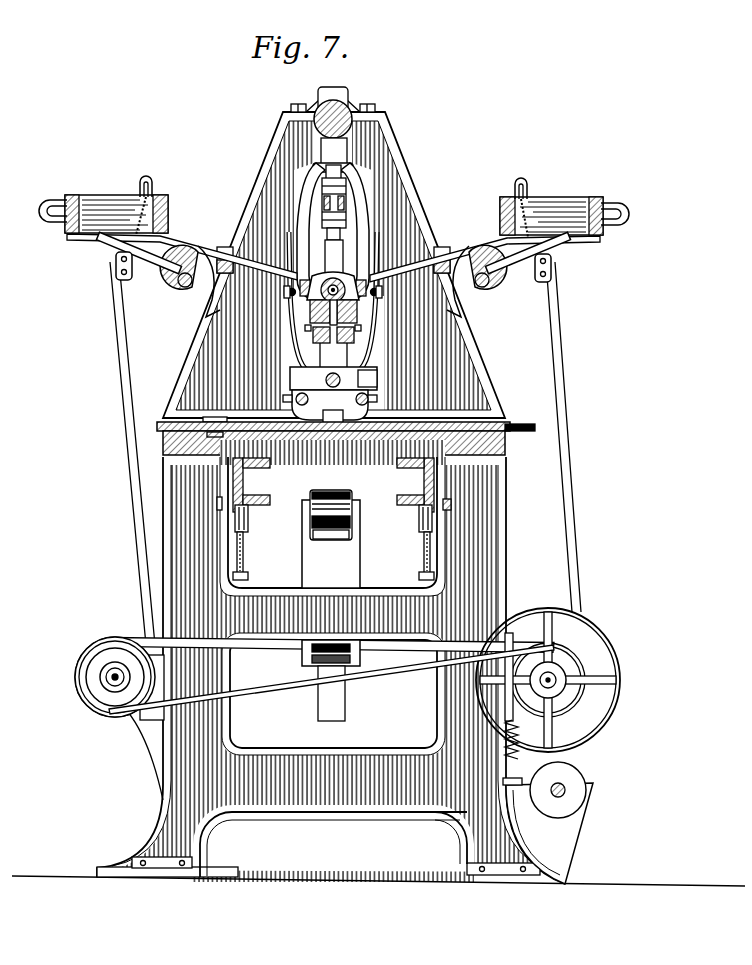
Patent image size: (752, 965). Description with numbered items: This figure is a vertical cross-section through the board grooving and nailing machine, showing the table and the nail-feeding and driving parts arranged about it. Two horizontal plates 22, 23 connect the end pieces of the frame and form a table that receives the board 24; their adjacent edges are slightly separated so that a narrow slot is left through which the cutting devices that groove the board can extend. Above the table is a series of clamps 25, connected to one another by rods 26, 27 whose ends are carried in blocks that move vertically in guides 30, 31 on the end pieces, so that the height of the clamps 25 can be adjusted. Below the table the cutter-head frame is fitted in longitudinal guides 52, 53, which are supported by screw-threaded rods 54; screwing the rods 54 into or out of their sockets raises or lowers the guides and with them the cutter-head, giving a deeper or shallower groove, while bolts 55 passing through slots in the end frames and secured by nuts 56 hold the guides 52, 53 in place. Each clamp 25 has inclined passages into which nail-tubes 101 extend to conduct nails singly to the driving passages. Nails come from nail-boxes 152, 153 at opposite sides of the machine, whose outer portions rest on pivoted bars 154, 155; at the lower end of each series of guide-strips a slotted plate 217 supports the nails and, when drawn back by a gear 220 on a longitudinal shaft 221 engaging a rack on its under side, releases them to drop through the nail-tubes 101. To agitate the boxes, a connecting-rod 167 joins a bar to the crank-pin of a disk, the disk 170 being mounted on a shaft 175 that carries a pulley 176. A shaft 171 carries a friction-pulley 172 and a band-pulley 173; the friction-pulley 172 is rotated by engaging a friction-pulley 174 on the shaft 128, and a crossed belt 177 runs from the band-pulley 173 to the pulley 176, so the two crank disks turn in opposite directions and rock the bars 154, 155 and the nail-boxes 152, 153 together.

The horizontal plate 22 is at (285, 449).
The horizontal plate 23 is at (372, 446).
The board 24 is at (160, 427).
The clamp 25 is at (330, 406).
The rod 26 is at (358, 405).
The rod 27 is at (306, 405).
The guide 30 is at (290, 379).
The guide 31 is at (378, 380).
The guide 52 is at (240, 480).
The guide 53 is at (420, 480).
The screw-threaded rod 54 is at (244, 552).
The bolt 55 is at (451, 502).
The nut 56 is at (219, 510).
The nail-tube 101 is at (290, 330).
The shaft 128 is at (560, 798).
The nail-box 152 is at (573, 206).
The nail-box 153 is at (99, 196).
The bar 154 is at (563, 252).
The bar 155 is at (113, 253).
The connecting-rod 167 is at (133, 493).
The disk 170 is at (93, 707).
The shaft 171 is at (551, 678).
The friction-pulley 172 is at (612, 726).
The band-pulley 173 is at (528, 719).
The friction-pulley 174 is at (583, 781).
The shaft 175 is at (114, 690).
The pulley 176 is at (537, 200).
The belt 177 is at (278, 693).
The plate 217 is at (289, 250).
The gear 220 is at (306, 280).
The shaft 221 is at (288, 291).